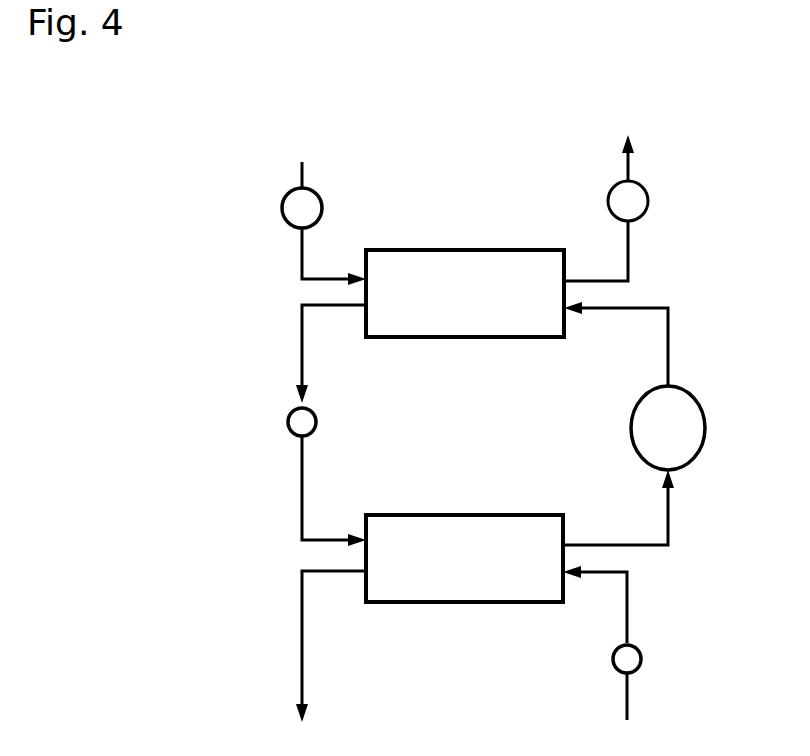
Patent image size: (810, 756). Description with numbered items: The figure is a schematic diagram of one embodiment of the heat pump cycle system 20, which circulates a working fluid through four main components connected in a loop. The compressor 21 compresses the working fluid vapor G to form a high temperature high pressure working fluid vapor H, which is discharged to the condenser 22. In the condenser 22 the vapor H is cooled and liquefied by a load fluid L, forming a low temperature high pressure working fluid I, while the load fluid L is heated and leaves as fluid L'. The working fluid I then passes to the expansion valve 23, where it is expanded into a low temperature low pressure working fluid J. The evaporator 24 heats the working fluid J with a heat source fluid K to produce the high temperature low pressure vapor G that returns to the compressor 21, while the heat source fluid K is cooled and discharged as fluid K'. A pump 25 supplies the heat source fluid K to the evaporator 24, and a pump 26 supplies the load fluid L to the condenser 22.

The heat pump cycle system 20 is at (458, 163).
The compressor 21 is at (705, 422).
The condenser 22 is at (490, 250).
The expansion valve 23 is at (316, 420).
The evaporator 24 is at (490, 515).
The pump 25 is at (641, 660).
The pump 26 is at (322, 209).